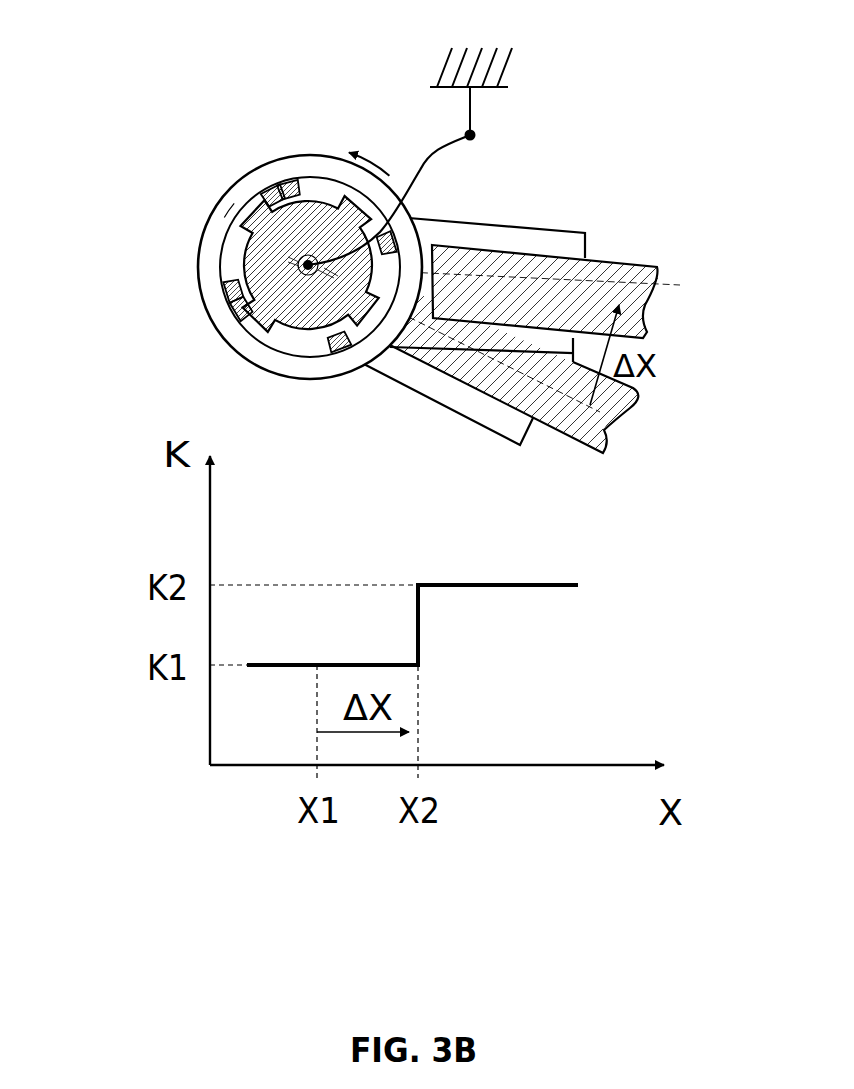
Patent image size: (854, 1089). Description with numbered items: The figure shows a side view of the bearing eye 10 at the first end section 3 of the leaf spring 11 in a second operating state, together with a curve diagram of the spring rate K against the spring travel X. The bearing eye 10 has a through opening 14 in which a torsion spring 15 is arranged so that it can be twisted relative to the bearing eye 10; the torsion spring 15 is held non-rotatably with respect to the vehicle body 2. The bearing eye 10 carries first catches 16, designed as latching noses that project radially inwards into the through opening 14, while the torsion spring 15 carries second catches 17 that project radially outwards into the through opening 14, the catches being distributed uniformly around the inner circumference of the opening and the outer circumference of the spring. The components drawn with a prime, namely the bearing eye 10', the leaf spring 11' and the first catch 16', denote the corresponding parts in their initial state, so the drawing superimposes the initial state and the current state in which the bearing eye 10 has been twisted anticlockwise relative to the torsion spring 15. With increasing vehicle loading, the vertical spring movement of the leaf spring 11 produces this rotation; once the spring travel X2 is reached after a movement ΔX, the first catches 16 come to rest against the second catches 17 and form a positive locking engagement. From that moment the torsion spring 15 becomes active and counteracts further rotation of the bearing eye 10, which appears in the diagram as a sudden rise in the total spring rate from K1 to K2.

The vehicle body 2 is at (471, 70).
The first end section 3 is at (680, 177).
The bearing eye 10 is at (343, 267).
The bearing eye in initial state 10' is at (421, 425).
The leaf spring 11 is at (550, 328).
The leaf spring in initial state 11' is at (546, 404).
The through opening 14 is at (200, 250).
The torsion spring 15 is at (250, 347).
The first catch 16 is at (295, 223).
The first catch in initial state 16' is at (265, 186).
The second catch 17 is at (230, 210).